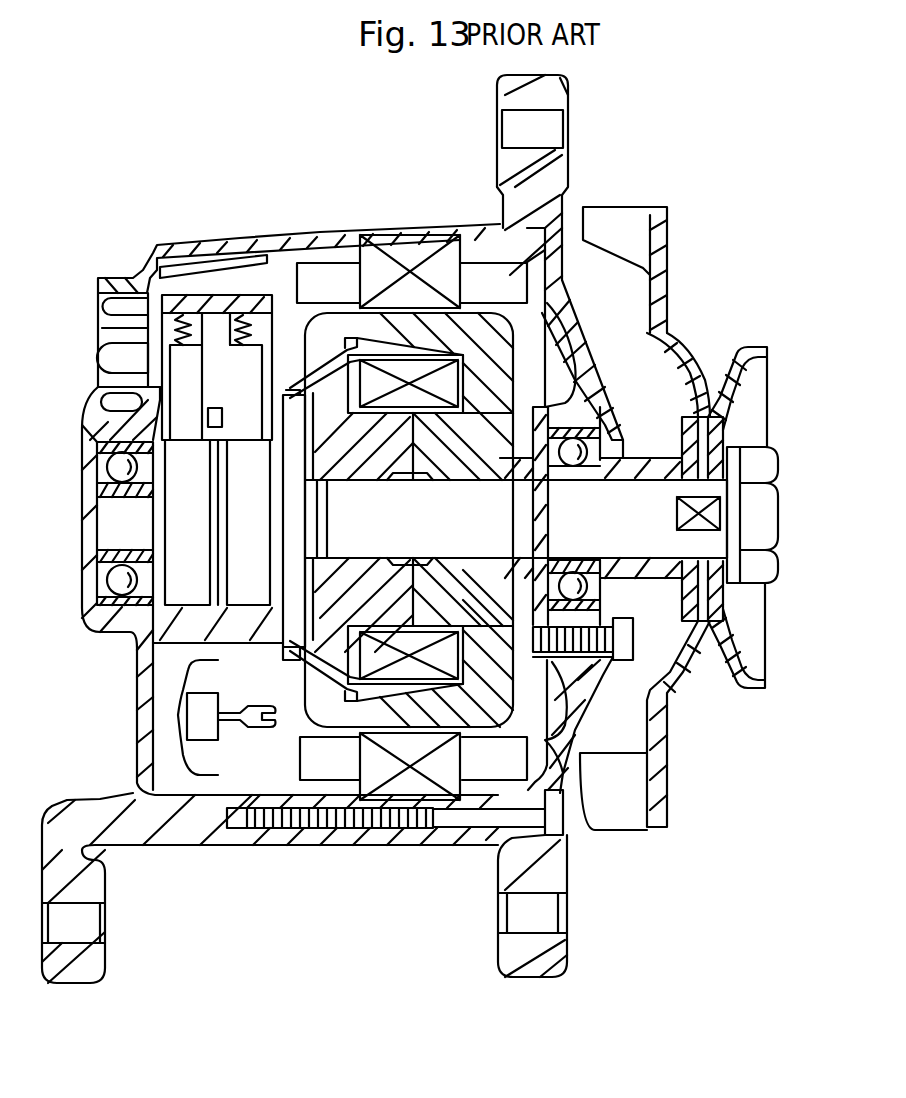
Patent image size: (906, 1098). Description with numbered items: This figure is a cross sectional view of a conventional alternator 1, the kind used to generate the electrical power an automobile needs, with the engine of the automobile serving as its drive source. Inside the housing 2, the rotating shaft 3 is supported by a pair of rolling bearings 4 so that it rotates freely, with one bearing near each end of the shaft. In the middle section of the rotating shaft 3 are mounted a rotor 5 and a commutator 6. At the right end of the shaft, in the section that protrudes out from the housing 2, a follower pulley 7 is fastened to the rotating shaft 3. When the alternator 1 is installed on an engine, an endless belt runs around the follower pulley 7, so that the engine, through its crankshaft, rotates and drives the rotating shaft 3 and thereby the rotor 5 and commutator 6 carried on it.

The alternator 1 is at (597, 135).
The housing 2 is at (323, 838).
The rotating shaft 3 is at (634, 488).
The rolling bearings 4 is at (107, 438).
The rotor 5 is at (338, 718).
The commutator 6 is at (178, 515).
The follower pulley 7 is at (730, 403).